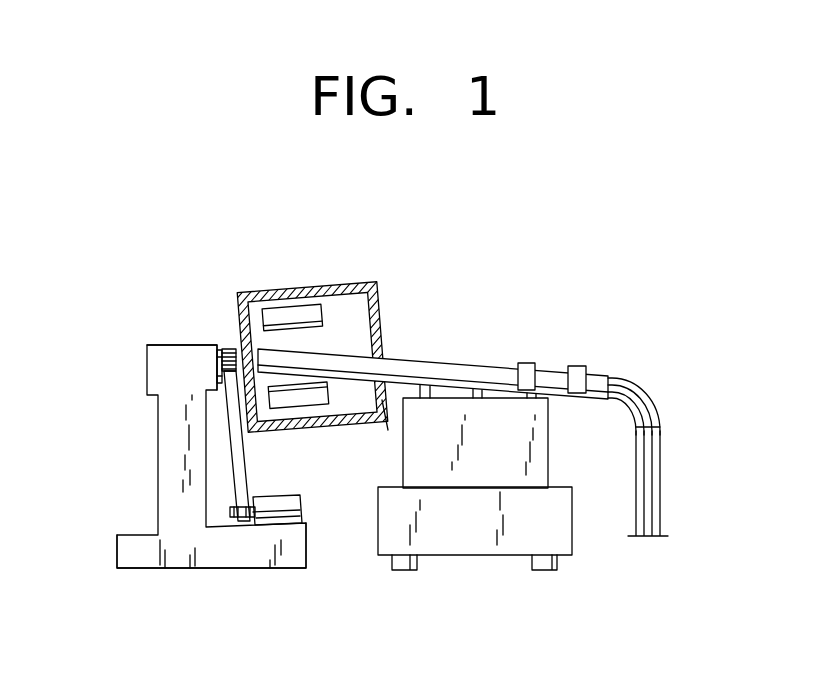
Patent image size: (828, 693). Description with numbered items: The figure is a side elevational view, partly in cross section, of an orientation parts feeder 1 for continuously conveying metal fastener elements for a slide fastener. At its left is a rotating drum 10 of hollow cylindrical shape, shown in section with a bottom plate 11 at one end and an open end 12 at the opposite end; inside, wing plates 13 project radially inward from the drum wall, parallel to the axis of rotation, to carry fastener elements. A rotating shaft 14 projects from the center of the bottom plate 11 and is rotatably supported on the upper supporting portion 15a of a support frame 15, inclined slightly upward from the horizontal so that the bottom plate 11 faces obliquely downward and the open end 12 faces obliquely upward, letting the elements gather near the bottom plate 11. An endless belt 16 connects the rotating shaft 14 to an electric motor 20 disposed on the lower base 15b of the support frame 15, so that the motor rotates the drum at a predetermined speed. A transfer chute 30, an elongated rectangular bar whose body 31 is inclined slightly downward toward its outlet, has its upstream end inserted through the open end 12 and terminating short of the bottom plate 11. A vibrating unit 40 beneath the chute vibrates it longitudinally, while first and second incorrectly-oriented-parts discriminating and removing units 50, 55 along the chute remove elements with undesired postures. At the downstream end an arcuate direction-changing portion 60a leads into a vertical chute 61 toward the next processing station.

The orientation parts feeder 1 is at (440, 303).
The rotating drum 10 is at (313, 320).
The bottom plate 11 is at (238, 325).
The open end 12 is at (388, 410).
The wing plates 13 is at (323, 287).
The rotating shaft 14 is at (218, 345).
The support frame 15 is at (170, 450).
The upper supporting portion 15a is at (160, 373).
The lower base 15b is at (152, 555).
The endless belt 16 is at (247, 458).
The electric motor 20 is at (288, 500).
The transfer chute 30 is at (433, 321).
The rod body 31 is at (467, 368).
The vibrating unit 40 is at (465, 533).
The first incorrectly-oriented-parts discriminating and removing unit 50 is at (533, 363).
The second incorrectly-oriented-parts discriminating and removing unit 55 is at (580, 366).
The cable bend 60a is at (653, 402).
The vertical chute 61 is at (664, 447).